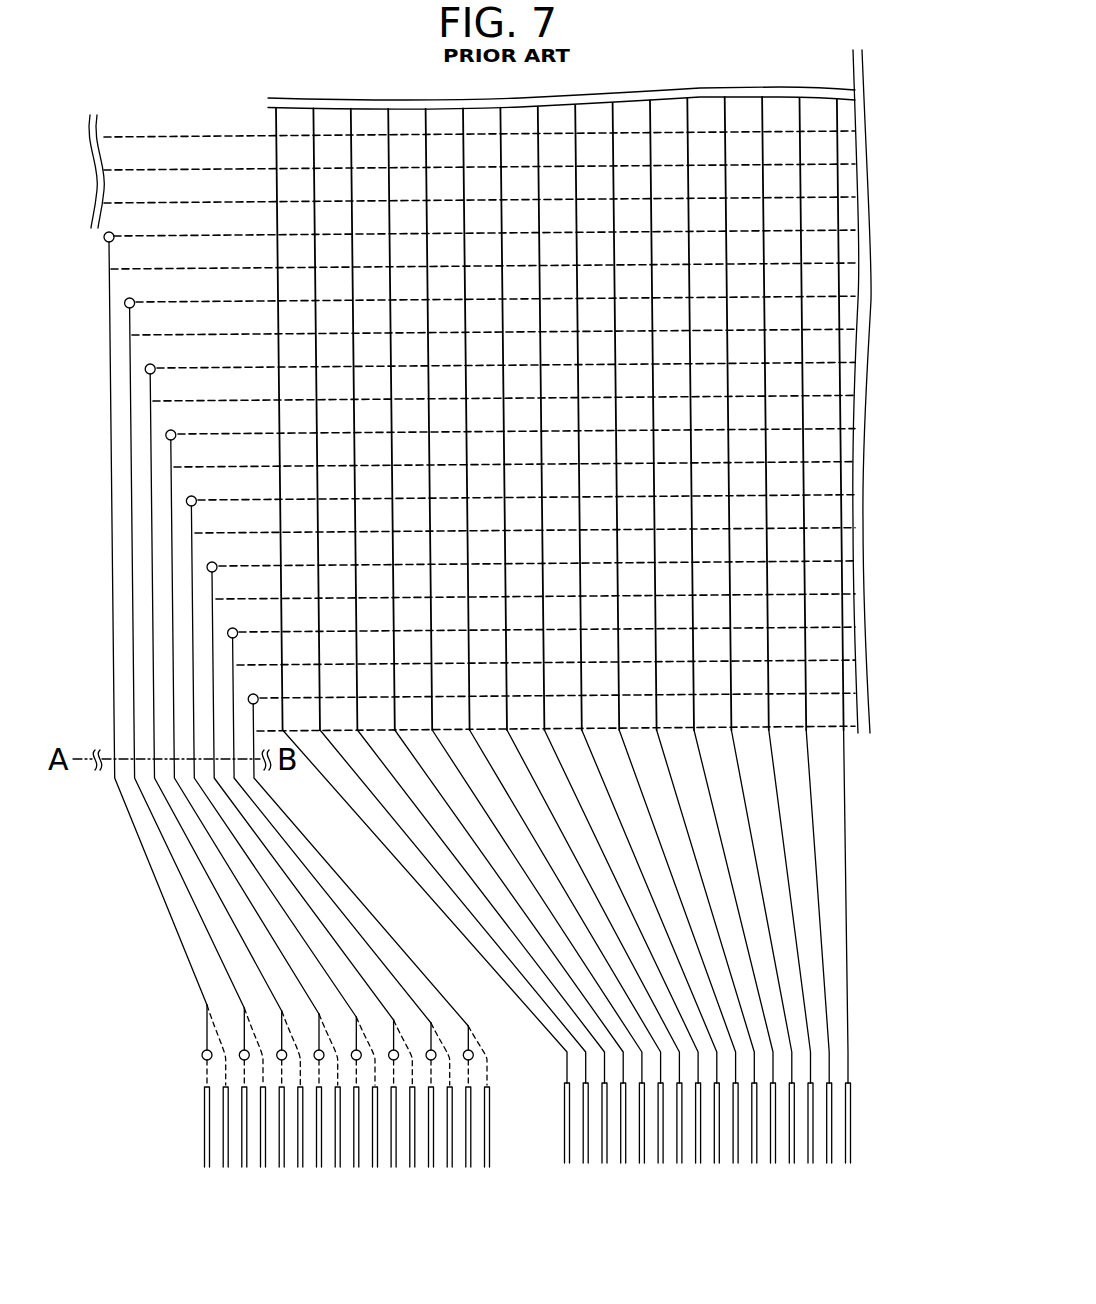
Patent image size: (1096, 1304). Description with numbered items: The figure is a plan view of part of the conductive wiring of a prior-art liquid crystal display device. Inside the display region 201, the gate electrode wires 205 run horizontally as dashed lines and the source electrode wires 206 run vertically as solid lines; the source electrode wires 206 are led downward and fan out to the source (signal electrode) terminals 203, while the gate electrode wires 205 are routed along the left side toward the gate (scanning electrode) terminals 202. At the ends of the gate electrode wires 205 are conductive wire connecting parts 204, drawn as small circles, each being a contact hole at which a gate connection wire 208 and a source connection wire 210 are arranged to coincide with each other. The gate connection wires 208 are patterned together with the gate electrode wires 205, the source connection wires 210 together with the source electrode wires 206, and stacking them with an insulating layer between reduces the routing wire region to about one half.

The display region 201 is at (827, 579).
The gate (scanning electrode) terminals 202 is at (518, 1173).
The source (signal electrode) terminals 203 is at (852, 1173).
The conductive wire connecting part 204 is at (97, 251).
The gate electrode wires 205 is at (823, 727).
The source electrode wires 206 is at (848, 1027).
The gate connection wires 208 is at (207, 1042).
The source connection wires 210 is at (207, 1020).